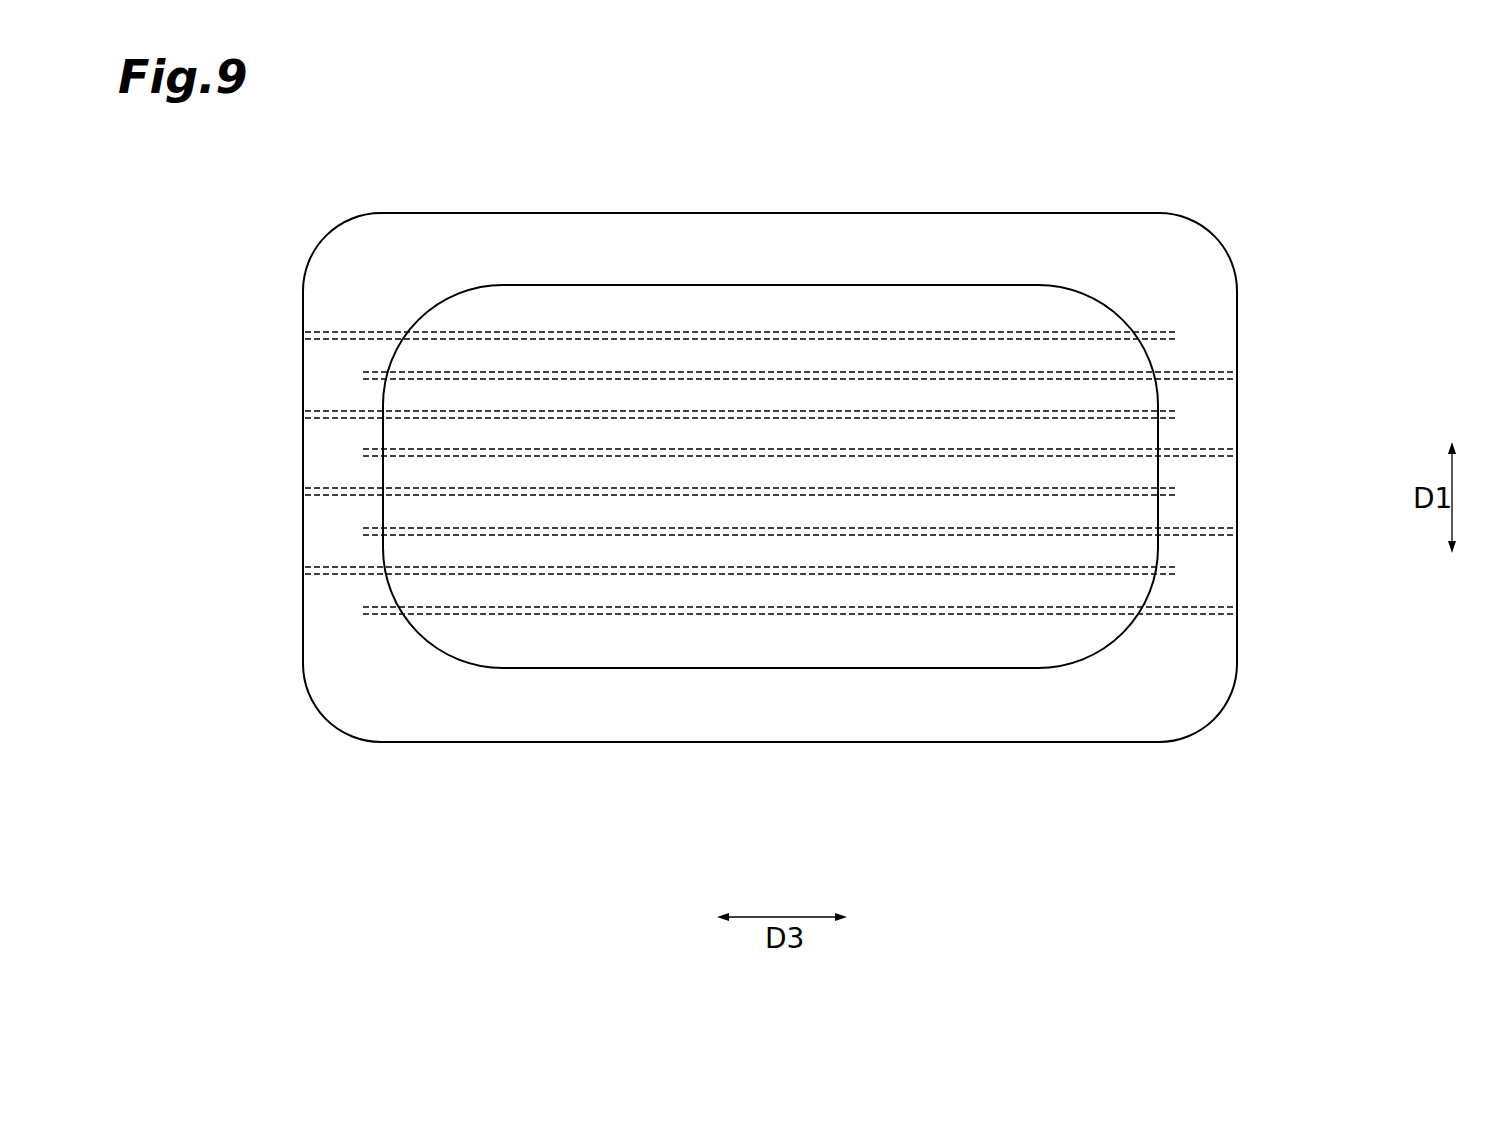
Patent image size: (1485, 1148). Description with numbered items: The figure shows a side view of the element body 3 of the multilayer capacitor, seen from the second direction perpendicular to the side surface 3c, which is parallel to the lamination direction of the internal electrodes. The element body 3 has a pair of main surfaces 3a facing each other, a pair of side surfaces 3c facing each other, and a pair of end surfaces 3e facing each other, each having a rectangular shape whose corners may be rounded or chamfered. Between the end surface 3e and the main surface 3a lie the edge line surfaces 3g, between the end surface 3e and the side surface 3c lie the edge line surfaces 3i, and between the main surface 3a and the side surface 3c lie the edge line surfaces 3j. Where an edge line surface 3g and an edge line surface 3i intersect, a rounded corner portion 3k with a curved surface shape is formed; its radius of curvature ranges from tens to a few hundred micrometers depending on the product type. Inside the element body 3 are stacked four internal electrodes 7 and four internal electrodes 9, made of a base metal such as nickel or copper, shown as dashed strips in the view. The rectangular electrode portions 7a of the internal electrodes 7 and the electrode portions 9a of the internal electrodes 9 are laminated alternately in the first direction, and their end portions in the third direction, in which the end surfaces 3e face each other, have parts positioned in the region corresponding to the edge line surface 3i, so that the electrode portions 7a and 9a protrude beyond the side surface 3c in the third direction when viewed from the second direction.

The element body 3 is at (763, 455).
The main surface 3a is at (787, 213).
The side surface 3c is at (945, 315).
The end surface 3e is at (303, 480).
The edge line surface 3g is at (335, 230).
The edge line surface 3i is at (342, 362).
The edge line surface 3j is at (649, 250).
The corner portion 3k is at (355, 250).
The internal electrode 7 is at (571, 403).
The electrode portion 7a is at (1177, 410).
The internal electrode 9 is at (584, 545).
The electrode portion 9a is at (366, 455).